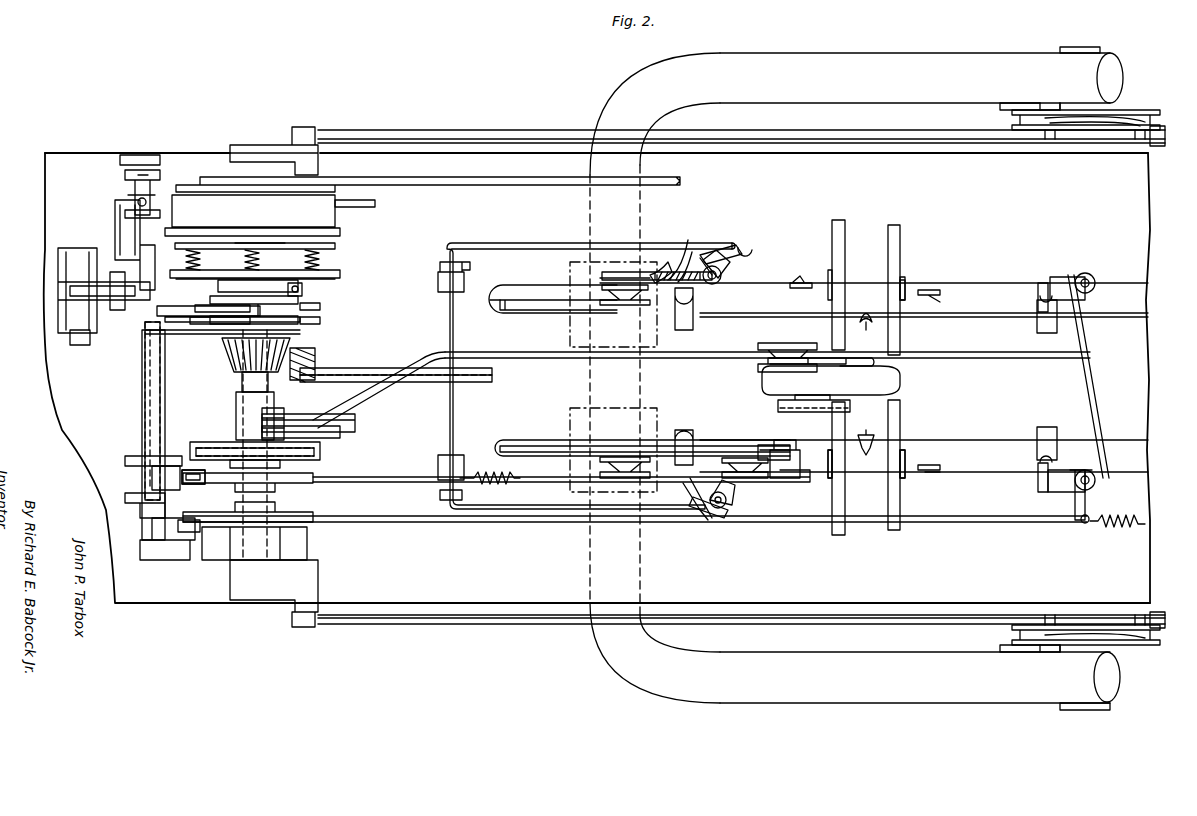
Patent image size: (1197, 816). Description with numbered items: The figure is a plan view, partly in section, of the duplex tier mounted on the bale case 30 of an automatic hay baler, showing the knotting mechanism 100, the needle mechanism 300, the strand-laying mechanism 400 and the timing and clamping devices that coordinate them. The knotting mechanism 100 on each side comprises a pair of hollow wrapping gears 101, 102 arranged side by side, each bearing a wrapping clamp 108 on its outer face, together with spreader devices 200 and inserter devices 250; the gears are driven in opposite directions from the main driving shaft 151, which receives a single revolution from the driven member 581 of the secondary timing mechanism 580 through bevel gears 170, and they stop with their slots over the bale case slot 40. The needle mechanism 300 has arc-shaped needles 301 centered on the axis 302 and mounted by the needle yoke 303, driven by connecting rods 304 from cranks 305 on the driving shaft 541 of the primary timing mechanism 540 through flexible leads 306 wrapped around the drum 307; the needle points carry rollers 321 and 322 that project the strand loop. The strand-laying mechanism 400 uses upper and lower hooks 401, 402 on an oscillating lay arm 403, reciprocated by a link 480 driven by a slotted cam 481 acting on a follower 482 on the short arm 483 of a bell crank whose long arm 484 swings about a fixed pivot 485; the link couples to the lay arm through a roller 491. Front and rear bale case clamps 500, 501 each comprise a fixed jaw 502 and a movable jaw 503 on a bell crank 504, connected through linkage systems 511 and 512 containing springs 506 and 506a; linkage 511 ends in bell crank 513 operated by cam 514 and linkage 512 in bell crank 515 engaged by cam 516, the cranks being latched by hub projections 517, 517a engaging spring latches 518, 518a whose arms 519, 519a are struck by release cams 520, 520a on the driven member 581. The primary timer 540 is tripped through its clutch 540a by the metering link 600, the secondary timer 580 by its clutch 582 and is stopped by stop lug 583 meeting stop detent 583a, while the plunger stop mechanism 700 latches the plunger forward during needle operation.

The bale case 30 is at (495, 604).
The bale case slot 40 is at (945, 320).
The knotting mechanism 100 is at (866, 377).
The hollow wrapping gear 101 is at (830, 226).
The hollow wrapping gear 102 is at (900, 232).
The wrapping clamp 108 is at (903, 278).
The main driving shaft 151 is at (422, 382).
The bevel gears 170 is at (318, 350).
The spreader devices 200 is at (863, 385).
The inserter devices 250 is at (795, 282).
The needle mechanism 300 is at (803, 703).
The needle 301 is at (565, 312).
The needle axis 302 is at (1107, 652).
The needle yoke 303 is at (768, 53).
The connecting rod 304 is at (535, 130).
The crank 305 is at (268, 145).
The flexible lead 306 is at (1012, 118).
The drum 307 is at (1028, 105).
The foremost roller 321 is at (772, 440).
The rearward roller 322 is at (725, 445).
The strand-laying mechanism 400 is at (660, 268).
The upper strand hook 401 is at (740, 458).
The lower strand hook 402 is at (622, 302).
The lay arm 403 is at (605, 283).
The link 480 is at (536, 358).
The slotted cam 481 is at (322, 454).
The follower 482 is at (258, 434).
The short arm of bell crank 483 is at (252, 420).
The long arm of bell crank 484 is at (355, 418).
The fixed pivot 485 is at (340, 432).
The roller 491 is at (758, 368).
The front bale case clamp 500 is at (1070, 377).
The rear bale case clamp 501 is at (737, 245).
The fixed jaw 502 is at (695, 300).
The movable jaw 503 is at (700, 240).
The bell crank 504 is at (738, 250).
The spring 506 is at (1103, 530).
The spring 506a is at (476, 472).
The linkage system 511 is at (436, 520).
The linkage system 512 is at (518, 248).
The bell crank 513 is at (195, 540).
The cam 514 is at (313, 516).
The bell crank 515 is at (205, 484).
The cam 516 is at (313, 477).
The crank hub projection 517 is at (148, 493).
The crank hub projection 517a is at (146, 456).
The spring latch 518 is at (138, 500).
The spring latch 518a is at (152, 466).
The latch arm 519 is at (200, 299).
The latch arm 519a is at (208, 334).
The release cam 520 is at (300, 308).
The release cam 520a is at (320, 320).
The primary timing mechanism 540 is at (252, 219).
The clutch 540a is at (335, 215).
The driving shaft 541 is at (248, 392).
The secondary timing mechanism 580 is at (270, 260).
The driven member 581 is at (298, 300).
The clutch 582 is at (335, 278).
The stop lug 583 is at (300, 283).
The stop detent 583a is at (302, 292).
The metering mechanism link 600 is at (428, 173).
The plunger stop mechanism 700 is at (58, 318).